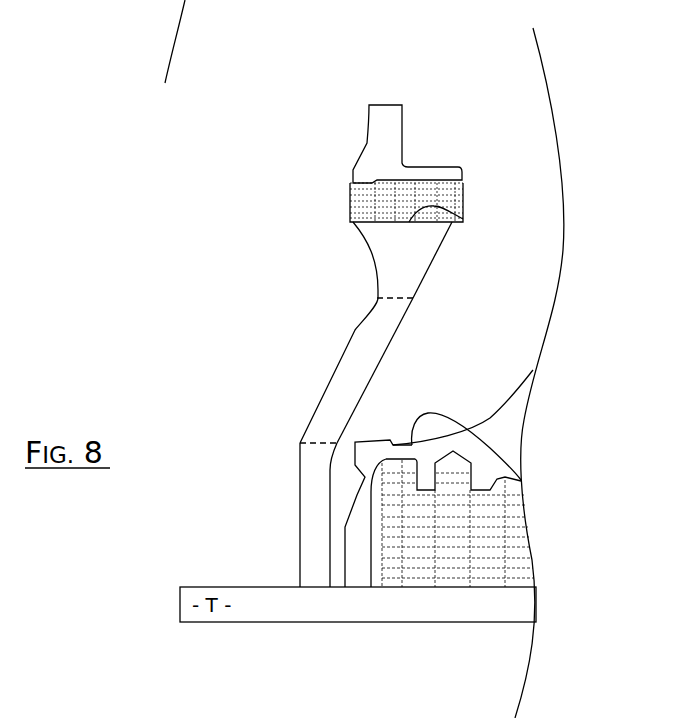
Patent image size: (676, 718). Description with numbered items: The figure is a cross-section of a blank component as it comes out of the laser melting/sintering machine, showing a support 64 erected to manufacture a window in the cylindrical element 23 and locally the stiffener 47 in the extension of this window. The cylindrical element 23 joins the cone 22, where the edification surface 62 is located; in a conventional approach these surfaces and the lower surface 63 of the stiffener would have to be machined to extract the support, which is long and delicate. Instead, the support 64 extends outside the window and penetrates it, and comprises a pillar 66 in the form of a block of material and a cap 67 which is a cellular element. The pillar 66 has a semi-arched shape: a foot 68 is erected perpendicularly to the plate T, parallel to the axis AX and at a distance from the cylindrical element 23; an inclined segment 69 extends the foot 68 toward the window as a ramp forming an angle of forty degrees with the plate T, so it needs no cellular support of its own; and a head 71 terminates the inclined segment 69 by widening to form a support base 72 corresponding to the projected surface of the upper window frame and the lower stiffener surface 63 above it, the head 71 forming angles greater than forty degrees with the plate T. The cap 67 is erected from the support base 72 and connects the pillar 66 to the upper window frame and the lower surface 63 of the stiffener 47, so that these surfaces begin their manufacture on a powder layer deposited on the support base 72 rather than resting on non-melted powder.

The cone 22 is at (518, 393).
The cylindrical element 23 is at (365, 142).
The stiffener 47 is at (428, 167).
The edification surface 62 is at (480, 428).
The lower surface of stiffener 63 is at (427, 181).
The support 64 is at (170, 230).
The pillar 66 is at (295, 358).
The cap 67 is at (325, 205).
The foot 68 is at (303, 516).
The inclined segment 69 is at (363, 363).
The head 71 is at (402, 237).
The support base 72 is at (463, 219).